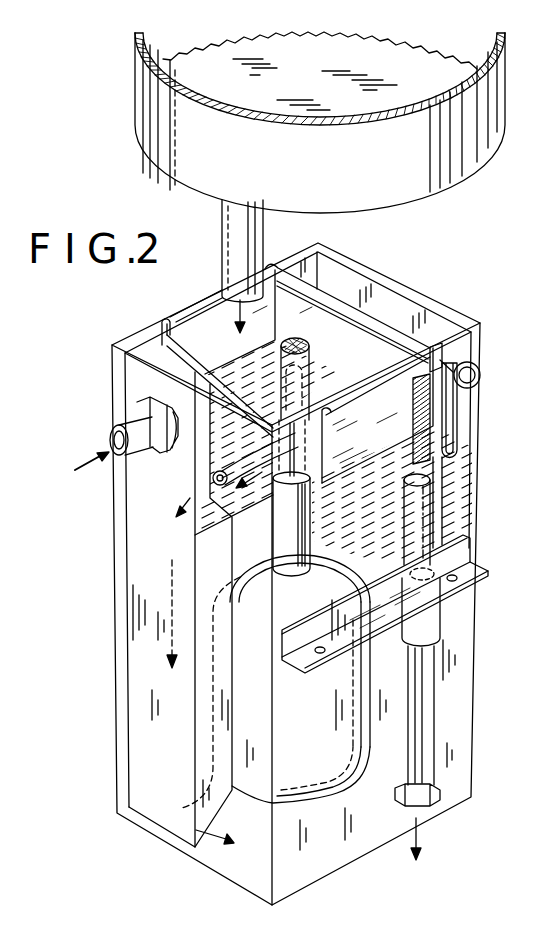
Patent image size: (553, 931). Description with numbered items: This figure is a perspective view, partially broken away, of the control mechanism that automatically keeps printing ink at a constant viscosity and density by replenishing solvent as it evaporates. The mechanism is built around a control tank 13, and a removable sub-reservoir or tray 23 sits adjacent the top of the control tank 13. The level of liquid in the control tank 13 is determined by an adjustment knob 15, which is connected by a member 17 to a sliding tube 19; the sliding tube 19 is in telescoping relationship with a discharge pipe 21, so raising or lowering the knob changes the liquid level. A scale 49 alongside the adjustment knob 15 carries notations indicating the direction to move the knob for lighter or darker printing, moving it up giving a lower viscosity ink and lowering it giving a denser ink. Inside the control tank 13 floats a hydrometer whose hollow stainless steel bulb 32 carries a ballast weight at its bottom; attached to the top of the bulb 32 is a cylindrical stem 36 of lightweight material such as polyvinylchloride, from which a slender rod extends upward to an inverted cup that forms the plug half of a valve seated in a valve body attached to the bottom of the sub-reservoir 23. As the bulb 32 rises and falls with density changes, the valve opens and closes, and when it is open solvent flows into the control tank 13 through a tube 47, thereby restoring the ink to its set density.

The control tank 13 is at (477, 650).
The adjustment knob 15 is at (481, 375).
The member 17 is at (442, 508).
The sliding tube 19 is at (417, 543).
The discharge pipe 21 is at (427, 732).
The sub-reservoir or tray 23 is at (368, 338).
The hollow stainless steel bulb 32 is at (320, 733).
The cylindrical stem 36 is at (286, 534).
The tube 47 is at (213, 478).
The scale 49 is at (433, 421).